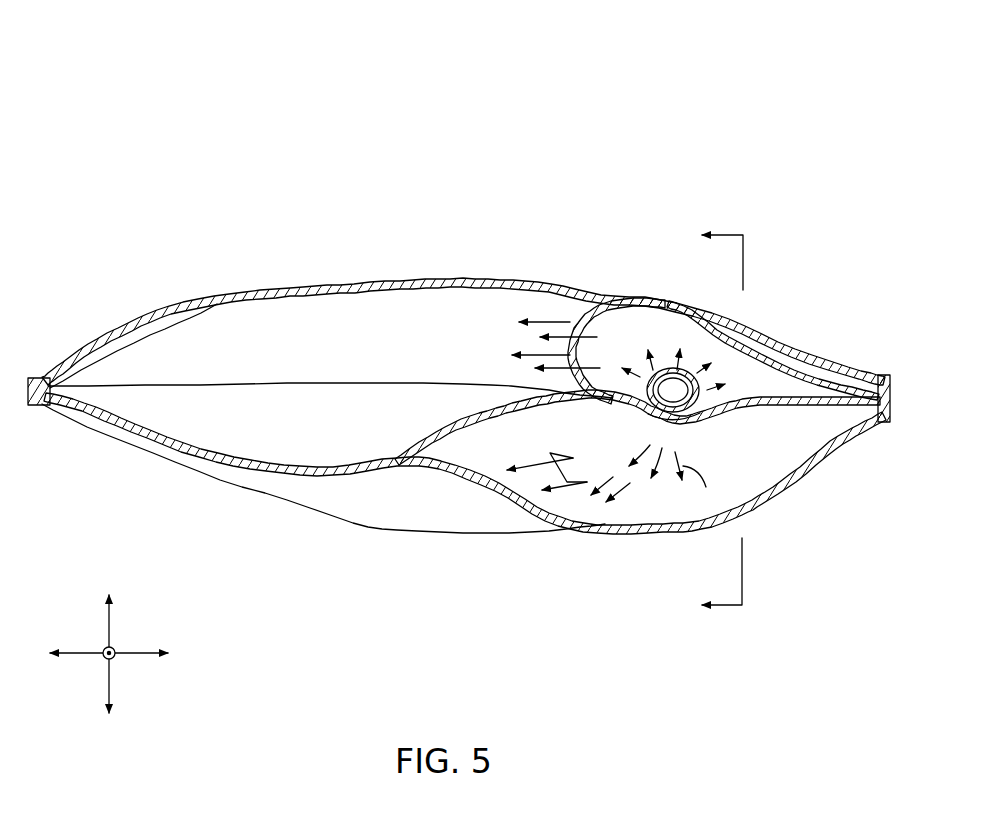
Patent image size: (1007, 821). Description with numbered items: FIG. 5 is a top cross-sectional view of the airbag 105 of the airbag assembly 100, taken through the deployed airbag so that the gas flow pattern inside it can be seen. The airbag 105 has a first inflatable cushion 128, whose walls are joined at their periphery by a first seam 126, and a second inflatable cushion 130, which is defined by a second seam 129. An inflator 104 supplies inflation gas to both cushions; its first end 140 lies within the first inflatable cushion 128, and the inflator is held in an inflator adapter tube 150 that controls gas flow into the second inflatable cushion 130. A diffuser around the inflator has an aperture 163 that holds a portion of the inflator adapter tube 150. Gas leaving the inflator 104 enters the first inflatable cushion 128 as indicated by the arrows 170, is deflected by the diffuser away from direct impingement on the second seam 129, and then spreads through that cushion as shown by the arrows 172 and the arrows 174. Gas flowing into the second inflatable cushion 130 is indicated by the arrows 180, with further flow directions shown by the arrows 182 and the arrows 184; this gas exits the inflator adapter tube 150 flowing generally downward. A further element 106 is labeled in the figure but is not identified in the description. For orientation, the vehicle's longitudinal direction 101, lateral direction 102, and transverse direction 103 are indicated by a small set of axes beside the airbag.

The airbag assembly 100 is at (650, 66).
The airbag 105 is at (230, 205).
The outer layer 106 is at (787, 341).
The inflator 104 is at (699, 353).
The second inflatable cushion 130 is at (793, 453).
The second seam 129 is at (420, 463).
The first inflatable cushion 128 is at (370, 308).
The first seam 126 is at (38, 407).
The first end 140 is at (677, 368).
The inflator adapter tube 150 is at (643, 418).
The aperture 163 is at (703, 416).
The arrows 174 is at (530, 345).
The arrows 172 is at (592, 362).
The arrows 170 is at (709, 388).
The arrows 184 is at (550, 453).
The arrows 180 is at (723, 455).
The arrows 182 is at (630, 486).
The longitudinal direction 101 is at (145, 651).
The lateral direction 102 is at (112, 612).
The transverse direction 103 is at (115, 660).